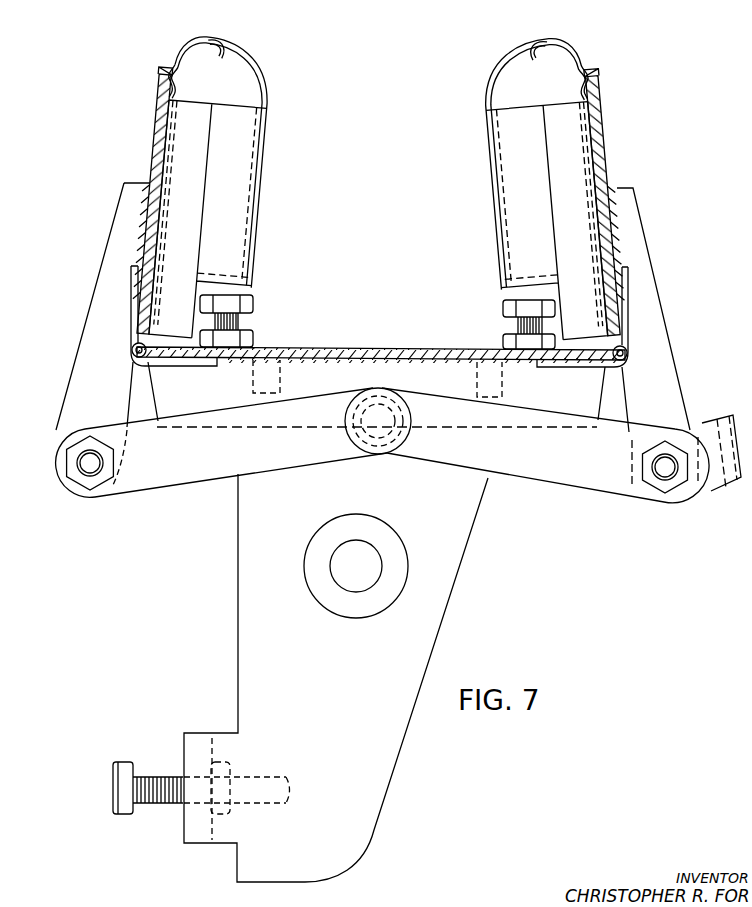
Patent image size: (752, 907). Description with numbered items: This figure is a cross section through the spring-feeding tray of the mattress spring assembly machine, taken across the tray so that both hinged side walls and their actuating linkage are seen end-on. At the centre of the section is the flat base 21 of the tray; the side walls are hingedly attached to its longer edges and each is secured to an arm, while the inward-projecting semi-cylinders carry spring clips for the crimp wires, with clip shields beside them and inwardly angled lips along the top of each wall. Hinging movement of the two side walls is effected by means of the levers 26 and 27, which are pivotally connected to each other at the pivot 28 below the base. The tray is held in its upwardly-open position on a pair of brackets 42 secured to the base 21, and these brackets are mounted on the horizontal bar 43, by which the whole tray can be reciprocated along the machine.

The flat base 21 is at (388, 352).
The lever 26 is at (543, 473).
The lever 27 is at (193, 473).
The pivotal connection 28 is at (379, 422).
The brackets 42 is at (257, 650).
The horizontal bar 43 is at (358, 568).